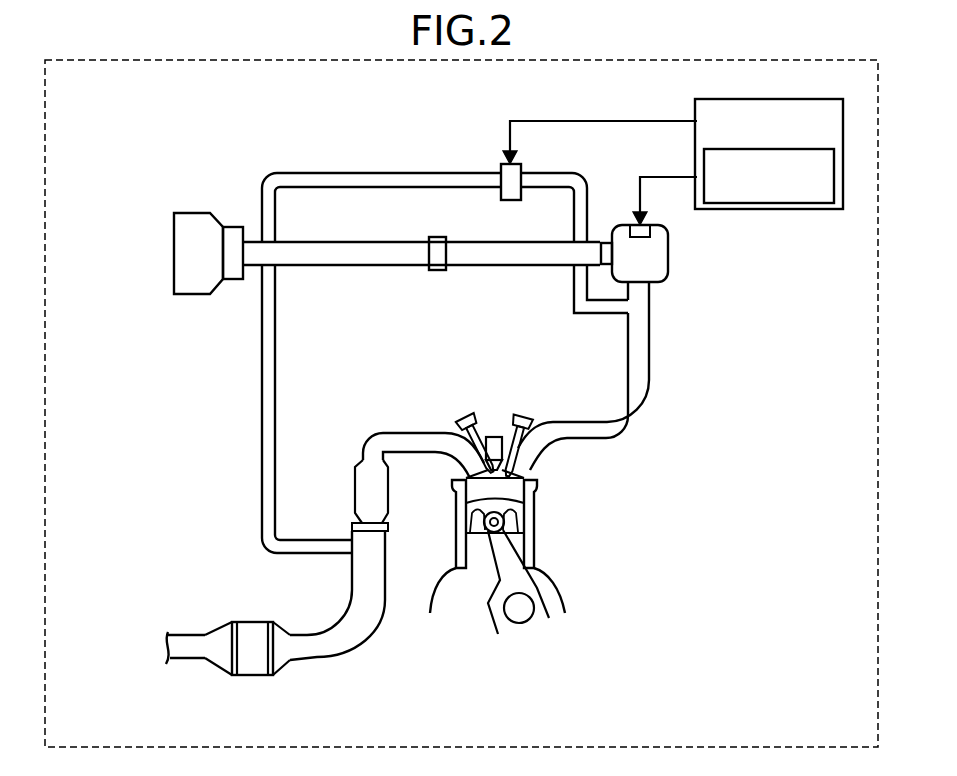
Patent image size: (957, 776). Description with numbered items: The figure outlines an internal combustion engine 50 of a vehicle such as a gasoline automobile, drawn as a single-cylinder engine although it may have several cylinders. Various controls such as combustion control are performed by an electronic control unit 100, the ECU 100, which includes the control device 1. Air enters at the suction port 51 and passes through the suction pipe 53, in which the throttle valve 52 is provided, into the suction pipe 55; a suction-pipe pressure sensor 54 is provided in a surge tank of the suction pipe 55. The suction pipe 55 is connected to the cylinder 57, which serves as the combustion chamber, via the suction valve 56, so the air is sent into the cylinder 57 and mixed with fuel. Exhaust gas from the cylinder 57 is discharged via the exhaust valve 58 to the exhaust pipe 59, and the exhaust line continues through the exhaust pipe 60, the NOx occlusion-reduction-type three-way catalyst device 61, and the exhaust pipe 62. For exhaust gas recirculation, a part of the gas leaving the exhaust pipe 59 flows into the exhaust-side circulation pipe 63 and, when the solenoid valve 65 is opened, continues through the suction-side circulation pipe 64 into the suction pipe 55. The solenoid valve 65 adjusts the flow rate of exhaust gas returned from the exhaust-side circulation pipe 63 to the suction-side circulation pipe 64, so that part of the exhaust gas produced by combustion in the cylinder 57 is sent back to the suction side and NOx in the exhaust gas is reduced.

The control device 1 is at (808, 149).
The electronic control unit 100 is at (746, 82).
The internal combustion engine 50 is at (228, 180).
The suction port 51 is at (182, 296).
The throttle valve 52 is at (437, 271).
The suction pipe 53 is at (510, 266).
The suction-pipe pressure sensor 54 is at (640, 237).
The suction pipe 55 is at (602, 430).
The suction valve 56 is at (524, 447).
The cylinder 57 is at (537, 534).
The exhaust valve 58 is at (476, 460).
The exhaust pipe 59 is at (388, 432).
The exhaust pipe 60 is at (360, 638).
The NOx occlusion-reduction-type three-way catalyst device 61 is at (250, 676).
The exhaust pipe 62 is at (185, 660).
The exhaust-side circulation pipe 63 is at (488, 189).
The suction-side circulation pipe 64 is at (538, 189).
The solenoid valve 65 is at (522, 170).